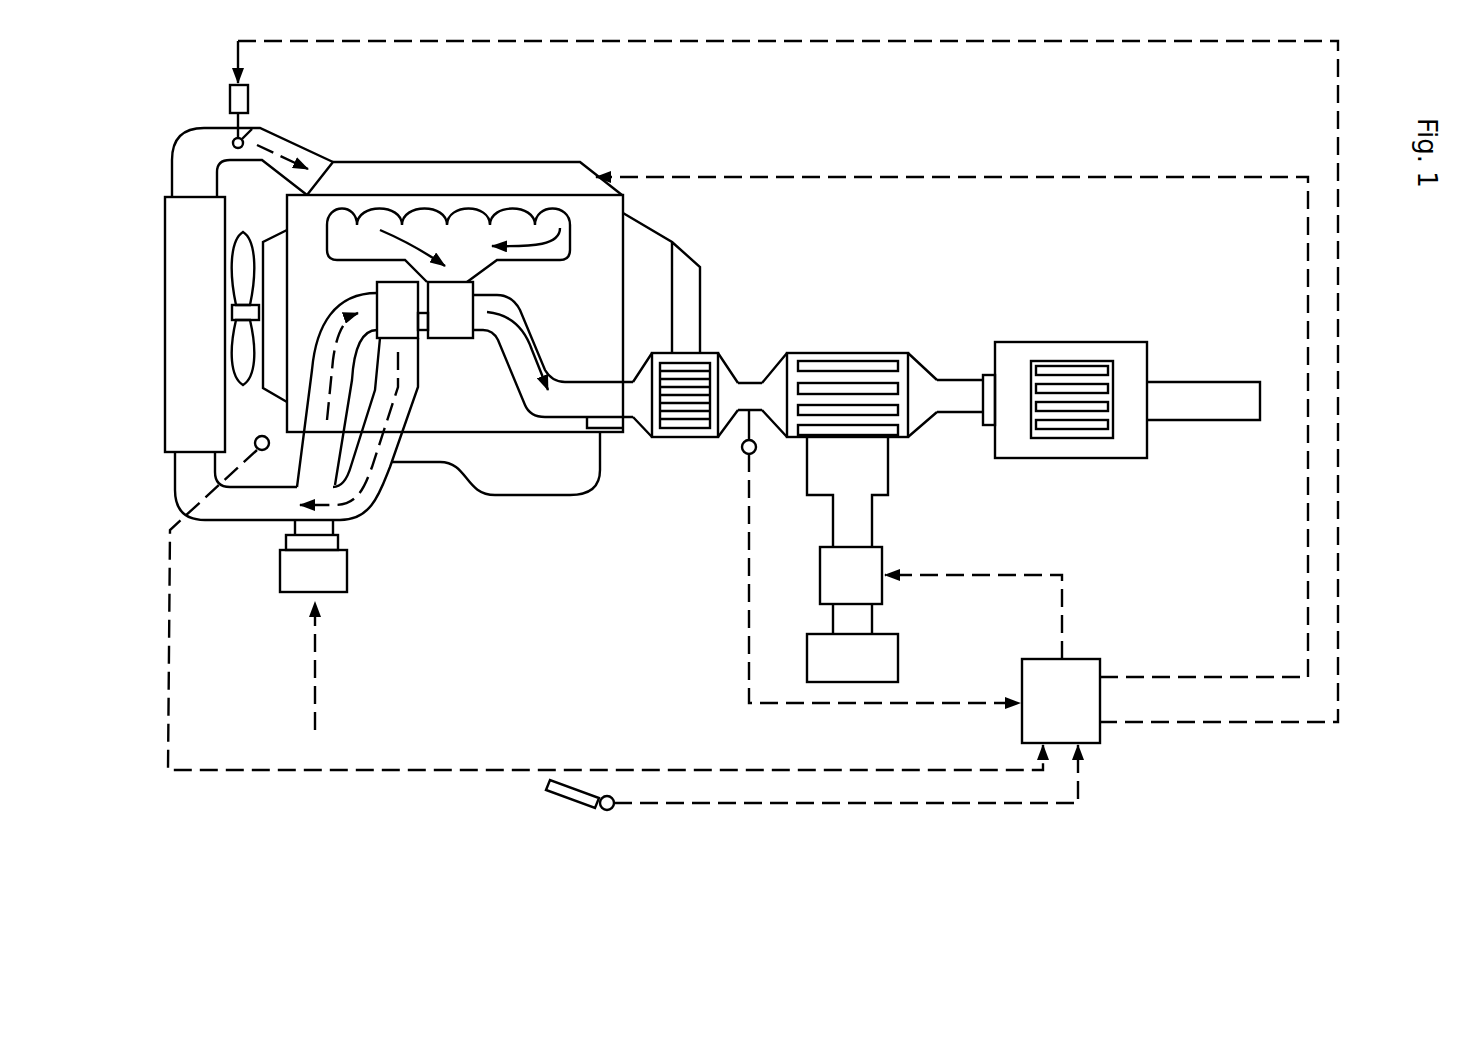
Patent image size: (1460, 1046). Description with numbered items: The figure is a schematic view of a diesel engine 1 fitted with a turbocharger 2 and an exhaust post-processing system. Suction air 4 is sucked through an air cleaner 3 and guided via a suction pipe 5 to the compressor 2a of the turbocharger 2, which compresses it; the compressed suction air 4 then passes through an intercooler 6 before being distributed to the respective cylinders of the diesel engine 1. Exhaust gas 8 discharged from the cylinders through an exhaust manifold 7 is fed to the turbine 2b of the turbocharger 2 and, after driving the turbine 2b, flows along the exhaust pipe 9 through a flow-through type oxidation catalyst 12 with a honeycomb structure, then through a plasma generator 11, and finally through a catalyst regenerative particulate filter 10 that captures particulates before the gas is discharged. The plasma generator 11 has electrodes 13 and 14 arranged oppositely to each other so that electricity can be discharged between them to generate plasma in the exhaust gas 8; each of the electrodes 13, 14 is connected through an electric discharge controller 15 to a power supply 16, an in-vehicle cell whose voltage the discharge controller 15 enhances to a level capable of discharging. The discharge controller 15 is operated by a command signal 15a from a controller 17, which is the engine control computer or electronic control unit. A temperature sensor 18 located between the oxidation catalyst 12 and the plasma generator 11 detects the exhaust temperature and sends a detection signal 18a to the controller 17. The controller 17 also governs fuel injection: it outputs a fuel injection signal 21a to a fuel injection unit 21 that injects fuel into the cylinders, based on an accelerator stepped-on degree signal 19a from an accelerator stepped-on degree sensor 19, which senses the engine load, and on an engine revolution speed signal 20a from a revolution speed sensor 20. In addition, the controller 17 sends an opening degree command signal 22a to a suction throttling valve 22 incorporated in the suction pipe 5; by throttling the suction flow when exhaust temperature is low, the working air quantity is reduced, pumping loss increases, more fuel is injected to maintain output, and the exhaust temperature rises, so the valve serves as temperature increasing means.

The diesel engine 1 is at (600, 160).
The turbocharger 2 is at (397, 388).
The compressor 2a is at (390, 283).
The turbine 2b is at (465, 330).
The air cleaner 3 is at (347, 568).
The suction air 4 is at (279, 150).
The suction pipe 5 is at (275, 127).
The intercooler 6 is at (182, 282).
The exhaust manifold 7 is at (470, 217).
The exhaust gas 8 is at (415, 240).
The exhaust pipe 9 is at (583, 430).
The catalyst regenerative particulate filter 10 is at (1072, 365).
The plasma generator 11 is at (885, 331).
The oxidation catalyst 12 is at (697, 375).
The electrode 13 is at (825, 405).
The electrode 14 is at (852, 425).
The electric discharge controller 15 is at (870, 565).
The command signal 15a is at (1017, 572).
The power supply 16 is at (878, 655).
The controller 17 is at (1075, 677).
The temperature sensor 18 is at (740, 457).
The detection signal 18a is at (752, 640).
The accelerator stepped-on degree sensor 19 is at (568, 803).
The accelerator stepped-on degree signal 19a is at (1078, 800).
The revolution speed sensor 20 is at (255, 442).
The engine revolution speed signal 20a is at (503, 768).
The fuel injection unit 21 is at (542, 180).
The fuel injection signal 21a is at (905, 177).
The suction throttling valve 22 is at (228, 152).
The opening degree command signal 22a is at (1212, 722).